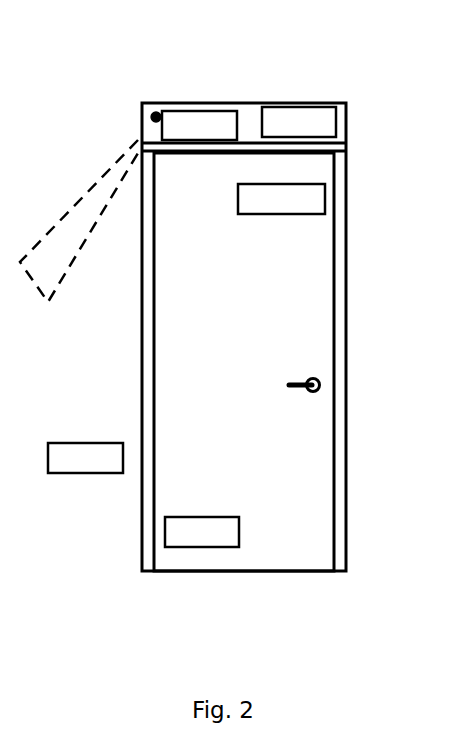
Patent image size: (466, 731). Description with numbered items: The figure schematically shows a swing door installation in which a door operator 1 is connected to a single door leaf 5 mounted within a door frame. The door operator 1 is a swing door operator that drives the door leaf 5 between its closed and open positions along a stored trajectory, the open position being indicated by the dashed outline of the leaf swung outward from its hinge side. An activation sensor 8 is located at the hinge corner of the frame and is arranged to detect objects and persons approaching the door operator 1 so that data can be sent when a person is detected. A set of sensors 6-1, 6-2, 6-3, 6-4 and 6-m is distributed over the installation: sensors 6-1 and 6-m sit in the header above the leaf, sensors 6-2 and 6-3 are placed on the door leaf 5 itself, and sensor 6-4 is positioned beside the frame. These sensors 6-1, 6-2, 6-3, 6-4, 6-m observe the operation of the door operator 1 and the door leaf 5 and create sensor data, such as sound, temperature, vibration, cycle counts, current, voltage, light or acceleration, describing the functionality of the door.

The door operator 1 is at (293, 286).
The door leaf 5 is at (278, 393).
The activation sensor 8 is at (86, 162).
The sensor 6-1 is at (199, 125).
The sensor 6-2 is at (281, 199).
The sensor 6-3 is at (202, 532).
The sensor 6-4 is at (85, 458).
The sensor 6-m is at (299, 122).